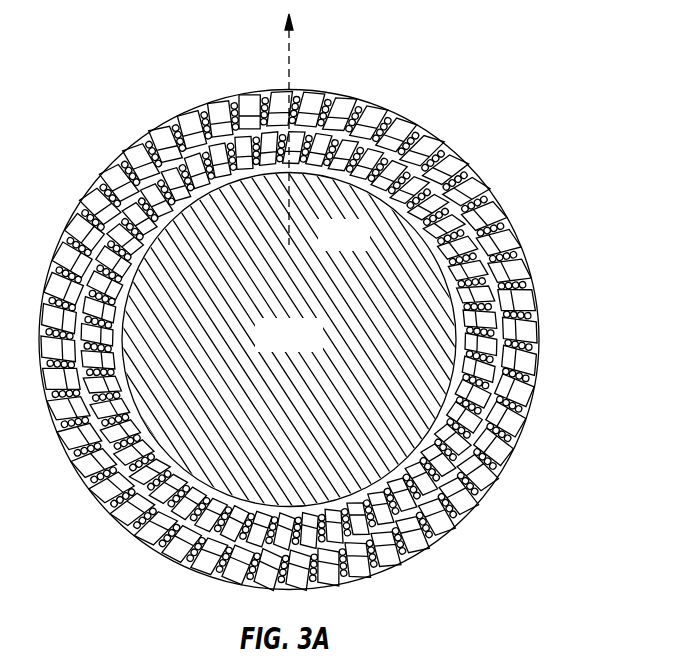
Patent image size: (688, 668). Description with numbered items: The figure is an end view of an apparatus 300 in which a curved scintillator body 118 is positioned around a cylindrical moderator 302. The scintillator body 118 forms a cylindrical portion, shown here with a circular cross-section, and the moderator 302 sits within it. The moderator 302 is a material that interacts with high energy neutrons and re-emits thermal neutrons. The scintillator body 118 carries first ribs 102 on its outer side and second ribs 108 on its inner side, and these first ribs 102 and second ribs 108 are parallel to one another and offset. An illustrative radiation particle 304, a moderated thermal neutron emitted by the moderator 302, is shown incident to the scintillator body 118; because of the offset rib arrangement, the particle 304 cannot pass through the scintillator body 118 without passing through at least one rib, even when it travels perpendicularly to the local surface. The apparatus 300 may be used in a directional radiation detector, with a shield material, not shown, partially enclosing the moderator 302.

The apparatus 300 is at (519, 36).
The first ribs 102 is at (157, 128).
The scintillator body 118 is at (439, 180).
The second ribs 108 is at (368, 183).
The moderator 302 is at (311, 349).
The radiation particle 304 is at (291, 58).